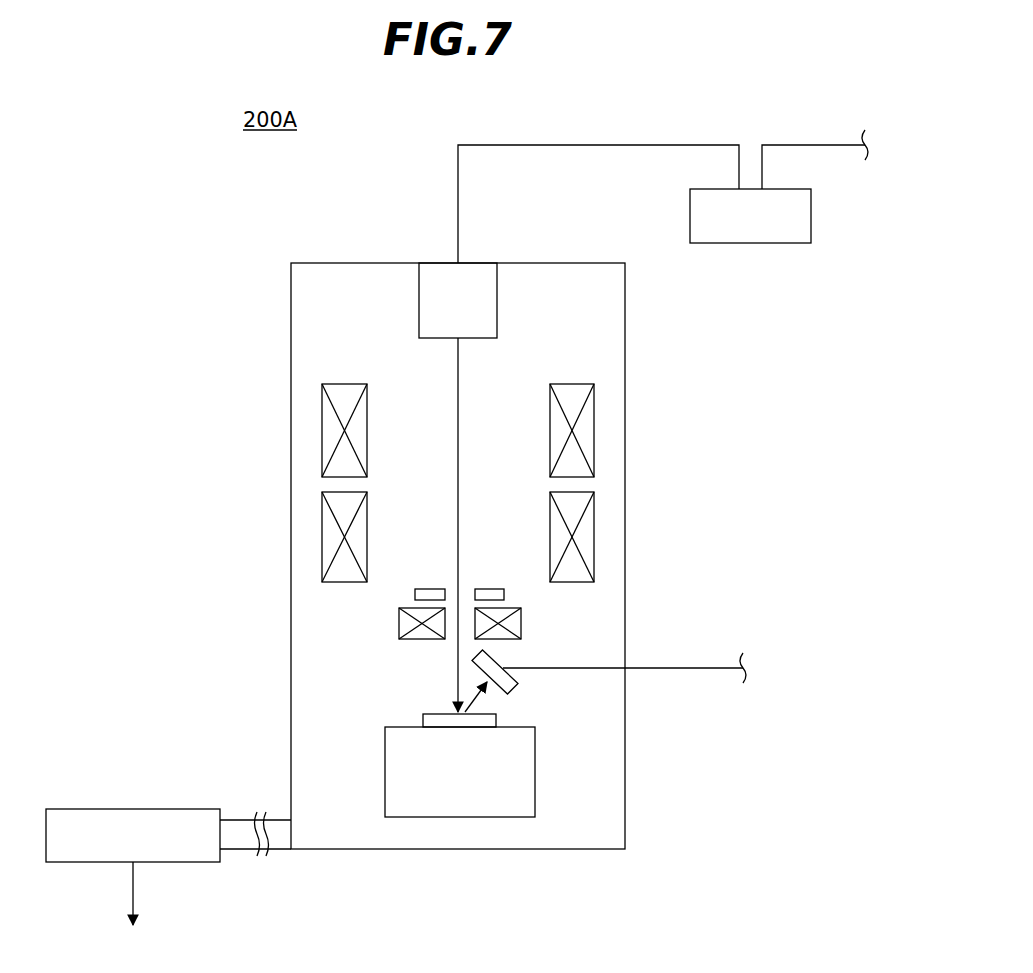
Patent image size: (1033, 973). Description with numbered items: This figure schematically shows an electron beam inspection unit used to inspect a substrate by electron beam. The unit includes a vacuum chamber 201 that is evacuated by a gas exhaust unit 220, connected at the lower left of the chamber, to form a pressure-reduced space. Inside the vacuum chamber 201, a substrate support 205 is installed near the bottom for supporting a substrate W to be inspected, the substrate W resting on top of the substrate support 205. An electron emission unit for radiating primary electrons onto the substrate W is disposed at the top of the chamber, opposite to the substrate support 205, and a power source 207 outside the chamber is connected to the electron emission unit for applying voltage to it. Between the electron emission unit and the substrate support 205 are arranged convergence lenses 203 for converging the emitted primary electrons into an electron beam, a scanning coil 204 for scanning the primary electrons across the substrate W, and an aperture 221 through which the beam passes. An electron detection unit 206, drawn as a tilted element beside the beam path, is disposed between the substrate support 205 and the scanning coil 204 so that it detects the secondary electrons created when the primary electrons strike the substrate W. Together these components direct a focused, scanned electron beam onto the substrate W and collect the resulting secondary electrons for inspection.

The vacuum chamber 201 is at (291, 333).
The convergence lenses 203 is at (418, 298).
The scanning coil 204 is at (399, 623).
The substrate support 205 is at (462, 798).
The electron detection unit 206 is at (510, 692).
The power source 207 is at (750, 243).
The gas exhaust unit 220 is at (132, 808).
The aperture 221 is at (414, 594).
The substrate W is at (423, 720).